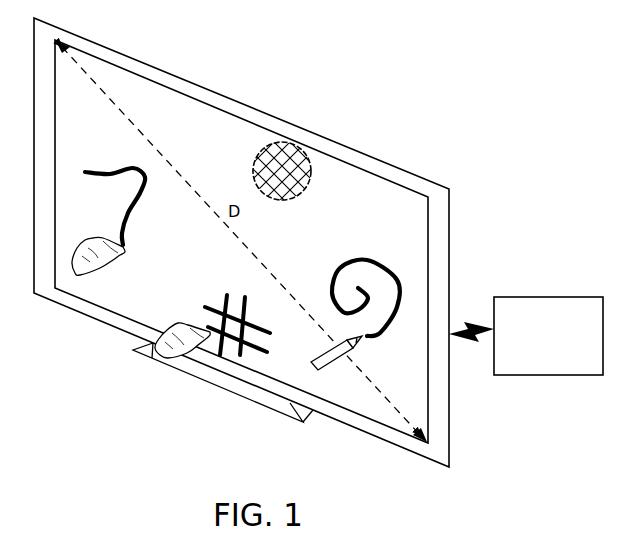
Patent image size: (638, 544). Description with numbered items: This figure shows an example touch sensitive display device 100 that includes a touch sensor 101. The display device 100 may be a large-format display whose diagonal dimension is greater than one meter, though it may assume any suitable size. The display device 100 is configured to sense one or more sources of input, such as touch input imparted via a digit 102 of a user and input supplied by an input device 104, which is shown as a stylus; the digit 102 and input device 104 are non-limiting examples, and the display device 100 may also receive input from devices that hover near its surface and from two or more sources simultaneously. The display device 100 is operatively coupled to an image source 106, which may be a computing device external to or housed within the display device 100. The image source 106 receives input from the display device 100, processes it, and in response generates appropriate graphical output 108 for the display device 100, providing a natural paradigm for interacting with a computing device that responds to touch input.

The touch sensitive display device 100 is at (292, 53).
The touch sensor 101 is at (304, 151).
The digit 102 is at (119, 255).
The input device 104 is at (316, 370).
The image source 106 is at (562, 369).
The graphical output 108 is at (119, 168).